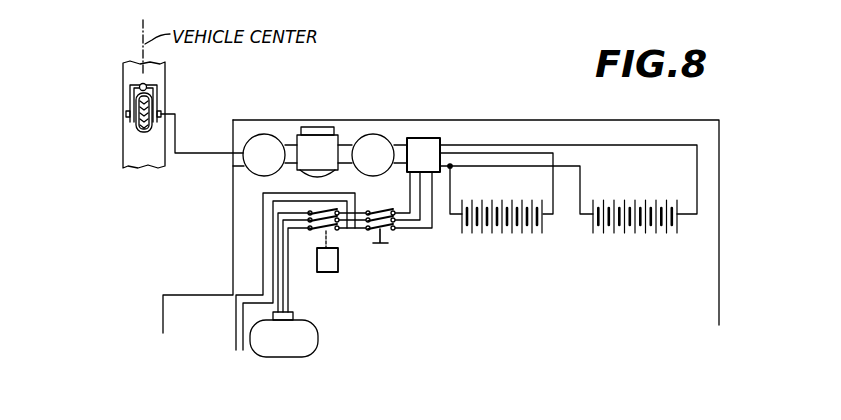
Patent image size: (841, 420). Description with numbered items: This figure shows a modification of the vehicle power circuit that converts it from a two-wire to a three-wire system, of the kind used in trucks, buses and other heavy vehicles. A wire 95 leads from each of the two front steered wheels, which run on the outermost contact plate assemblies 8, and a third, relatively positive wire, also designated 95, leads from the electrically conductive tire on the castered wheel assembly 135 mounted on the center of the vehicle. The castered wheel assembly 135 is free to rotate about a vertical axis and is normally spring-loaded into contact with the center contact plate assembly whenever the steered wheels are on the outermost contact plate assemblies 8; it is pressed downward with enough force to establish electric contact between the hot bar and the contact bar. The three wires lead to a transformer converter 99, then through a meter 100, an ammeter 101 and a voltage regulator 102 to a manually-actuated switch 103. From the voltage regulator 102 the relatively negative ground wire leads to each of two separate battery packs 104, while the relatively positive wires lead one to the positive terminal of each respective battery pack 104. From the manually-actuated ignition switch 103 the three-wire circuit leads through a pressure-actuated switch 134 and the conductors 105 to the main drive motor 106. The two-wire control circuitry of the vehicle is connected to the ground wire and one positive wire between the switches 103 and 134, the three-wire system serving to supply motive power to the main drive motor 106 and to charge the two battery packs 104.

The outermost contact plate assembly 8 is at (120, 131).
The castered wheel assembly 135 is at (168, 101).
The wire 95 is at (175, 133).
The transformer converter 99 is at (254, 172).
The meter 100 is at (320, 140).
The ammeter 101 is at (375, 134).
The voltage regulator 102 is at (432, 138).
The manually-actuated switch 103 is at (390, 230).
The battery pack 104 is at (510, 234).
The conductors to pump 105 is at (291, 302).
The main drive motor 106 is at (300, 341).
The pressure-actuated switch 134 is at (326, 230).